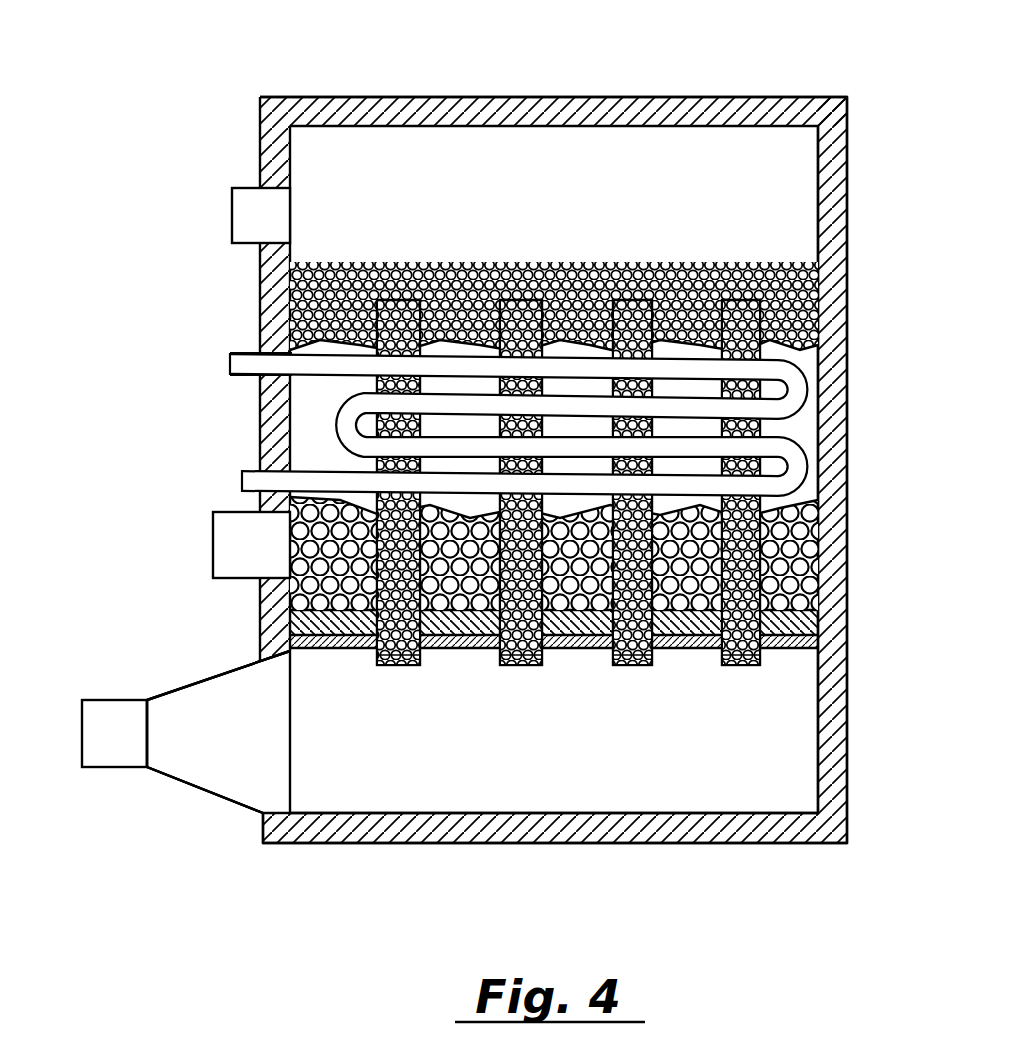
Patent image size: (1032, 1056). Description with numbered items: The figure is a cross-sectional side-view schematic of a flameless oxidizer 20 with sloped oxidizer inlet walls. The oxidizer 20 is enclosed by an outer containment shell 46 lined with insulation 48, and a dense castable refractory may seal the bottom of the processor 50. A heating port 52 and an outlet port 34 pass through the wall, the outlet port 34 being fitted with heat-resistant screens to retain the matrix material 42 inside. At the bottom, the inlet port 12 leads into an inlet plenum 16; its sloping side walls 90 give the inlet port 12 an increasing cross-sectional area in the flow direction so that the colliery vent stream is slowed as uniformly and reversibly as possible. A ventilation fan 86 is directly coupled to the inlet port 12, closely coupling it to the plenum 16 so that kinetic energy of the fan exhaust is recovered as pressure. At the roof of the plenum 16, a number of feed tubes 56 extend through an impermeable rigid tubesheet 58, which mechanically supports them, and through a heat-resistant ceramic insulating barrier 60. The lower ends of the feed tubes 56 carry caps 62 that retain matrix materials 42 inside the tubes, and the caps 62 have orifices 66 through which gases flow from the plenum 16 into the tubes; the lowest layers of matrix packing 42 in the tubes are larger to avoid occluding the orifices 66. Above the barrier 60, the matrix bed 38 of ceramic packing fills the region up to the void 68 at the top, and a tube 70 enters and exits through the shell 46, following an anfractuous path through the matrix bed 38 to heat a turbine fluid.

The oxidizer 20 is at (742, 91).
The outer containment shell 46 is at (500, 104).
The insulation 48 is at (840, 415).
The processor 50 is at (683, 832).
The inlet plenum 16 is at (517, 797).
The void 68 is at (572, 197).
The matrix materials 42 is at (665, 288).
The matrix bed 38 is at (810, 366).
The tube 70 is at (230, 363).
The heating port 52 is at (232, 212).
The outlet port 34 is at (228, 546).
The heat resistant ceramic insulating barrier 60 is at (812, 631).
The tubesheet 58 is at (803, 653).
The caps 62 is at (505, 668).
The orifices 66 is at (403, 668).
The feed tubes 56 is at (500, 662).
The inlet port 12 is at (192, 758).
The sloping side walls 90 is at (217, 672).
The ventilation fan 86 is at (103, 771).